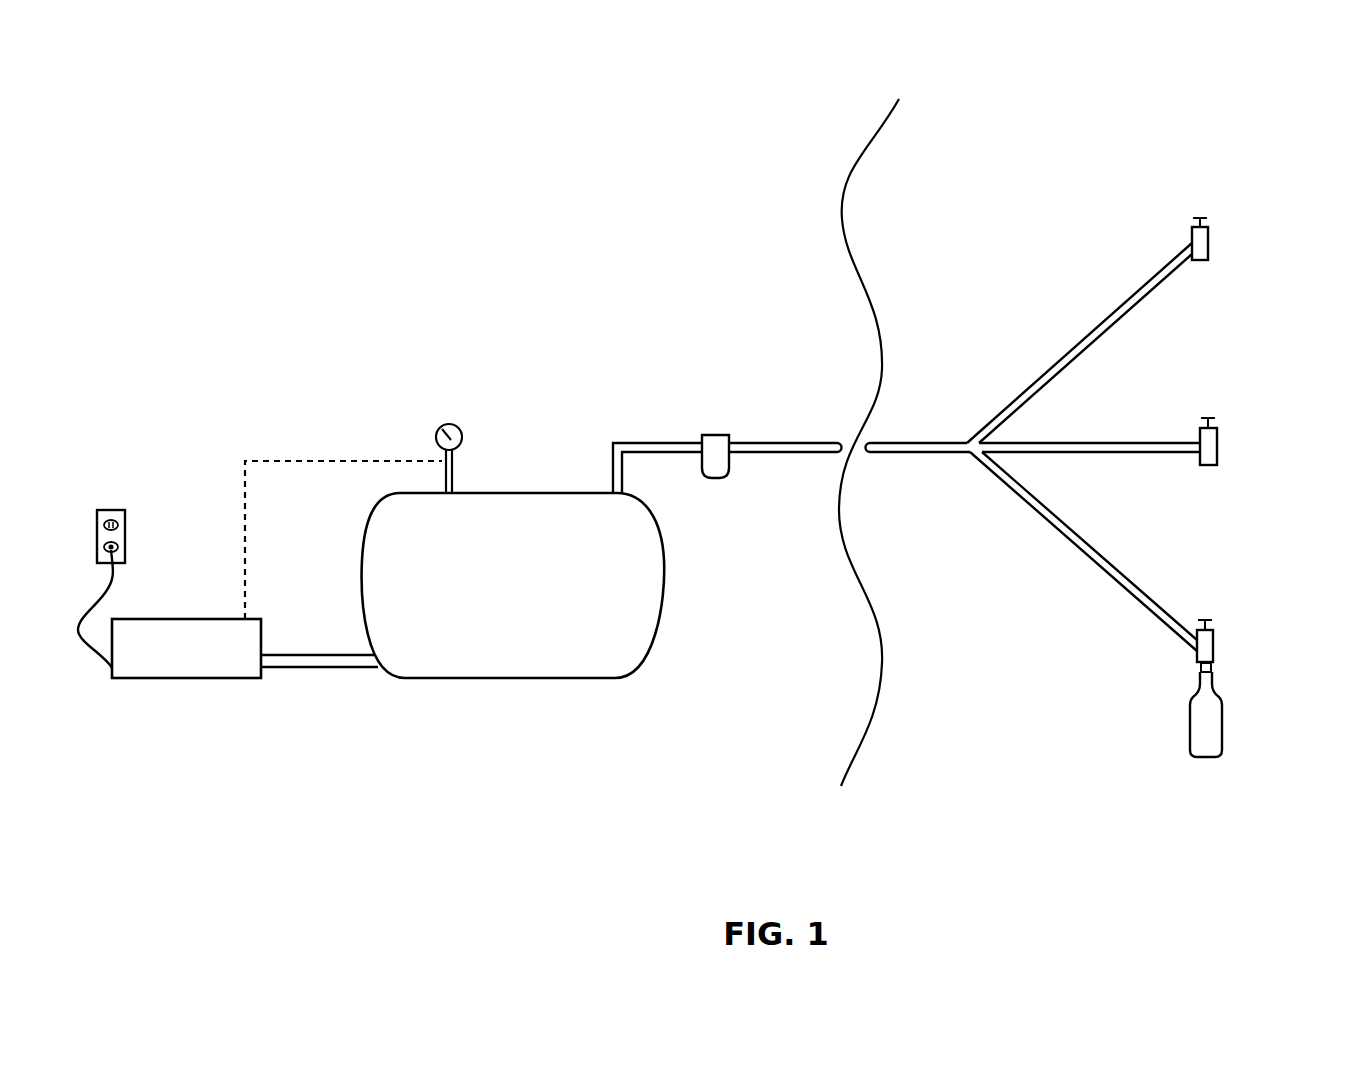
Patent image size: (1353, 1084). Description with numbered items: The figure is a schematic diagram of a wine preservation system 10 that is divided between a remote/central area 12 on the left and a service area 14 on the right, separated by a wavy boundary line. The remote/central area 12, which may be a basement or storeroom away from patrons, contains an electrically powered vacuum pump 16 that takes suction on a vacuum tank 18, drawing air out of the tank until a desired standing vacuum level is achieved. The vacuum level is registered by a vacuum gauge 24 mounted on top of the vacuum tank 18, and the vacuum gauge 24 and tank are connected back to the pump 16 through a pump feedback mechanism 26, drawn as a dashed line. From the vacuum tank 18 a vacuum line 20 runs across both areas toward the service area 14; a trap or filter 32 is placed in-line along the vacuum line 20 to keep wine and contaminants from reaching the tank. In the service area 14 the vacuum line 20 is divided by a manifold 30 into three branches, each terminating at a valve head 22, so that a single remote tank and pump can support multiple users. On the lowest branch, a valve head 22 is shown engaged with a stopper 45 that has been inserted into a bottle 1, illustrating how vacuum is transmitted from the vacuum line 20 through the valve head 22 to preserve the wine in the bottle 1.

The bottle 1 is at (1216, 765).
The wine preservation system 10 is at (275, 145).
The remote/central area 12 is at (448, 165).
The service area 14 is at (1176, 162).
The vacuum pump 16 is at (190, 685).
The vacuum tank 18 is at (522, 683).
The vacuum line 20 is at (906, 446).
The valve head 22 is at (1213, 270).
The vacuum gauge 24 is at (428, 440).
The pump feedback mechanism 26 is at (254, 459).
The manifold 30 is at (967, 465).
The trap or filter 32 is at (716, 487).
The stopper 45 is at (1217, 672).